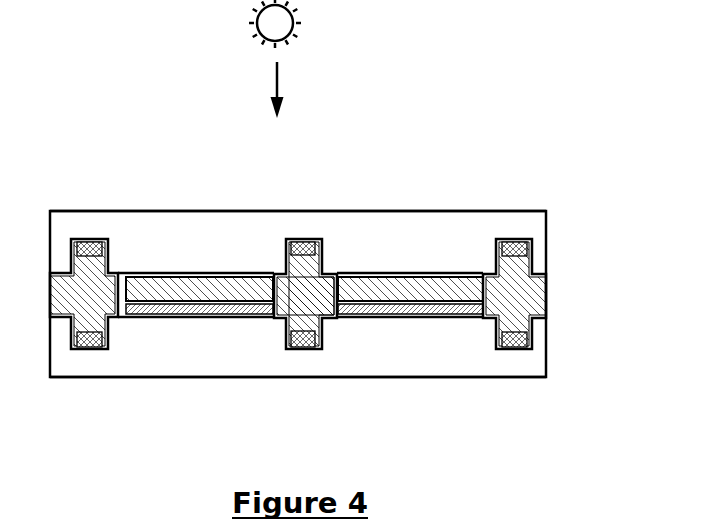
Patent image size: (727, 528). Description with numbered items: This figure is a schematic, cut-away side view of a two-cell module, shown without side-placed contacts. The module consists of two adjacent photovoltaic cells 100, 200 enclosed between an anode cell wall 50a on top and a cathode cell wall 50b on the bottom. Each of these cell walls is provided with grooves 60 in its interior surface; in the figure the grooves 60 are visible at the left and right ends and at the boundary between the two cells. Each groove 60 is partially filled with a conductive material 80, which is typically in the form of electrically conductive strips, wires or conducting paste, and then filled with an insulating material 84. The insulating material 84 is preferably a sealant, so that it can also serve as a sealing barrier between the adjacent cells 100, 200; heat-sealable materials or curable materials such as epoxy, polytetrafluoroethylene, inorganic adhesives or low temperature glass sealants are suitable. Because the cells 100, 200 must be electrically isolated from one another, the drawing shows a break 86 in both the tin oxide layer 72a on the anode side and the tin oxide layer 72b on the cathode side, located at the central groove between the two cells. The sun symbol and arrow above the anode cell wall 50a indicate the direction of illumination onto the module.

The photovoltaic cell 100 is at (134, 258).
The photovoltaic cell 200 is at (443, 257).
The anode cell wall 50a is at (506, 229).
The cathode cell wall 50b is at (482, 360).
The tin oxide layer 72a is at (260, 273).
The tin oxide layer 72b is at (537, 322).
The break 86 is at (328, 274).
The insulating material 84 is at (300, 322).
The conductive material 80 is at (304, 336).
The grooves 60 is at (291, 360).